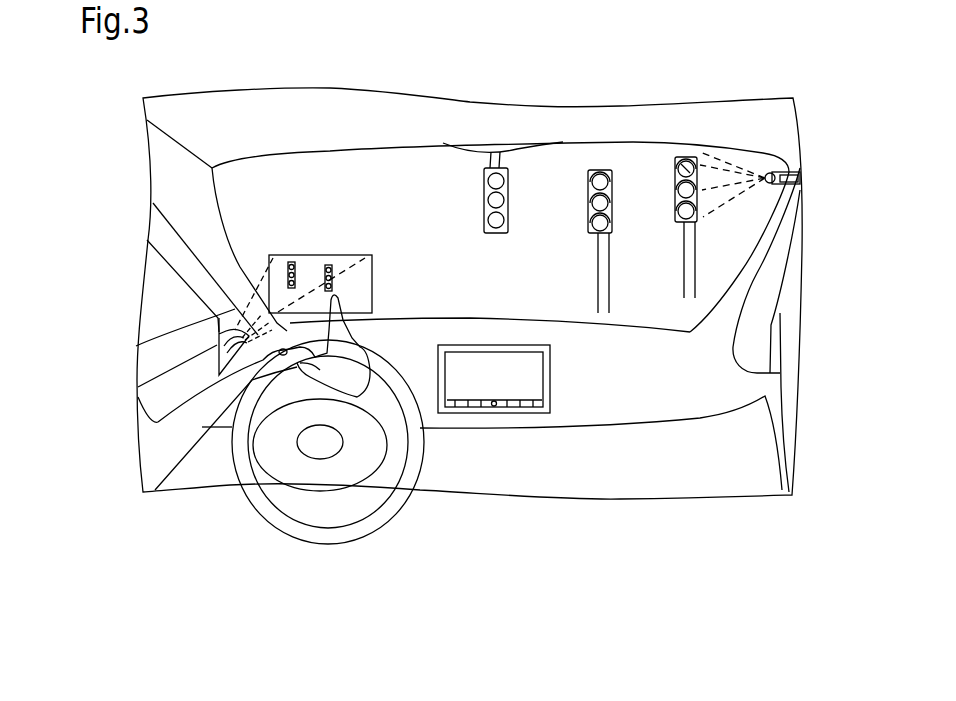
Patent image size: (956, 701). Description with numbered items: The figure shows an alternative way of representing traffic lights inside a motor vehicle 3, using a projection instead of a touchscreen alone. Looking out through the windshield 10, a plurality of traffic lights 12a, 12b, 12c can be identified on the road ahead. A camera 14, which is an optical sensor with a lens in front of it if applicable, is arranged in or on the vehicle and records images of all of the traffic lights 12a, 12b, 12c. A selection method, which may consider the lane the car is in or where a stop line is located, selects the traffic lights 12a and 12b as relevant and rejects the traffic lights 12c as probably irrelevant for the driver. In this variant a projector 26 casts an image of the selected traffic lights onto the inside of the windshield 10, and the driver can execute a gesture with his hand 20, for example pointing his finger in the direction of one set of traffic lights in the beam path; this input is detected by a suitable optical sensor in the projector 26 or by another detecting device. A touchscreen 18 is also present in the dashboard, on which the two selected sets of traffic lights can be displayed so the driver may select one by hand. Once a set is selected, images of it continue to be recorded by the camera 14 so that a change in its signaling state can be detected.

The motor vehicle 3 is at (618, 475).
The windshield 10 is at (417, 173).
The traffic lights 12a is at (488, 167).
The traffic lights 12b is at (590, 172).
The traffic lights 12c is at (675, 156).
The camera 14 is at (766, 170).
The touchscreen 18 is at (550, 378).
The hand 20 is at (342, 307).
The projector 26 is at (217, 327).